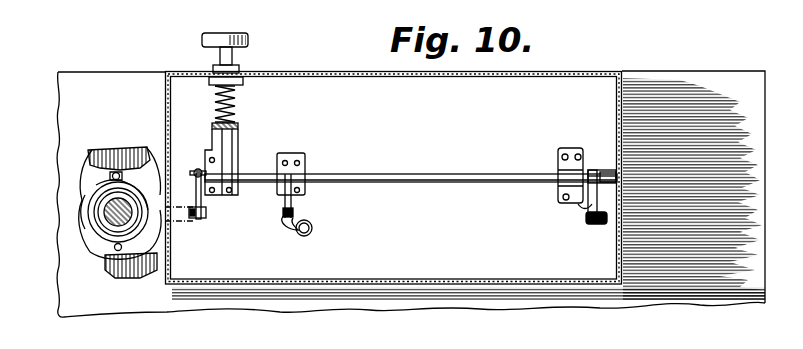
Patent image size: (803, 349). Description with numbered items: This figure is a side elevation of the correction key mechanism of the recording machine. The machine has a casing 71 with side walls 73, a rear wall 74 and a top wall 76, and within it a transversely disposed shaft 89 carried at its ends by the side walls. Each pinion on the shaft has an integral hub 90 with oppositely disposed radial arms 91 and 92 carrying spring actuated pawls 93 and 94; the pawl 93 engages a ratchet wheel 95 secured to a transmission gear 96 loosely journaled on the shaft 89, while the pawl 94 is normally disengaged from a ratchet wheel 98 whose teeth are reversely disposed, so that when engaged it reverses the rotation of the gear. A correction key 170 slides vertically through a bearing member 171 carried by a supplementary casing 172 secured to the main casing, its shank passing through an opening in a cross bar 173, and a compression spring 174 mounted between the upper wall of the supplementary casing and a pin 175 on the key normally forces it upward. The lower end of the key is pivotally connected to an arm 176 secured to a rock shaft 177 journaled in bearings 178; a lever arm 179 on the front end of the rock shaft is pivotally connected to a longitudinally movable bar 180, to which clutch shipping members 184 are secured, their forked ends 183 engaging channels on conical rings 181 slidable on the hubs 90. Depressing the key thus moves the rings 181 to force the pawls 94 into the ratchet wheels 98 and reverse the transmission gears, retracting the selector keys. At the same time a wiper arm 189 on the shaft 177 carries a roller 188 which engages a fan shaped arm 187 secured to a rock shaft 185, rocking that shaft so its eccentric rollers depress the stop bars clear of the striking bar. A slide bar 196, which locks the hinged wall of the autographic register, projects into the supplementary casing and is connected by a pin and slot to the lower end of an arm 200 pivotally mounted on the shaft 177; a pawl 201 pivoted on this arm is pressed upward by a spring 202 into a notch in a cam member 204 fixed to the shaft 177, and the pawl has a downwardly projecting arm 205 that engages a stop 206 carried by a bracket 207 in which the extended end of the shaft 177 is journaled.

The casing 71 is at (745, 302).
The side walls 73 is at (706, 298).
The rear wall 74 is at (766, 74).
The top wall 76 is at (656, 70).
The shaft 89 is at (90, 212).
The hub 90 is at (100, 237).
The radial arm 91 is at (127, 150).
The radial arm 92 is at (106, 250).
The pawl 93 is at (100, 184).
The pawl 94 is at (118, 250).
The ratchet wheel 95 is at (97, 200).
The transmission gear 96 is at (93, 160).
The ratchet wheel 98 is at (88, 196).
The correction key 170 is at (249, 40).
The bearing member 171 is at (243, 71).
The supplementary casing 172 is at (408, 283).
The cross bar 173 is at (238, 127).
The compression spring 174 is at (237, 105).
The pin 175 is at (205, 84).
The arm 176 is at (226, 166).
The rock shaft 177 is at (416, 173).
The bearings 178 is at (305, 166).
The lever arm 179 is at (183, 190).
The longitudinally movable bar 180 is at (192, 222).
The conical rings 181 is at (95, 224).
The forked ends 183 is at (145, 170).
The clutch shipping members 184 is at (166, 238).
The rock shaft 185 is at (313, 229).
The fan shaped arm 187 is at (297, 237).
The roller 188 is at (294, 212).
The wiper arm 189 is at (293, 206).
The slide bar 196 is at (615, 203).
The arm 200 is at (620, 192).
The pawl 201 is at (590, 214).
The spring 202 is at (592, 226).
The cam member 204 is at (593, 168).
The downwardly projecting arm 205 is at (588, 210).
The stop 206 is at (581, 208).
The bracket 207 is at (564, 148).